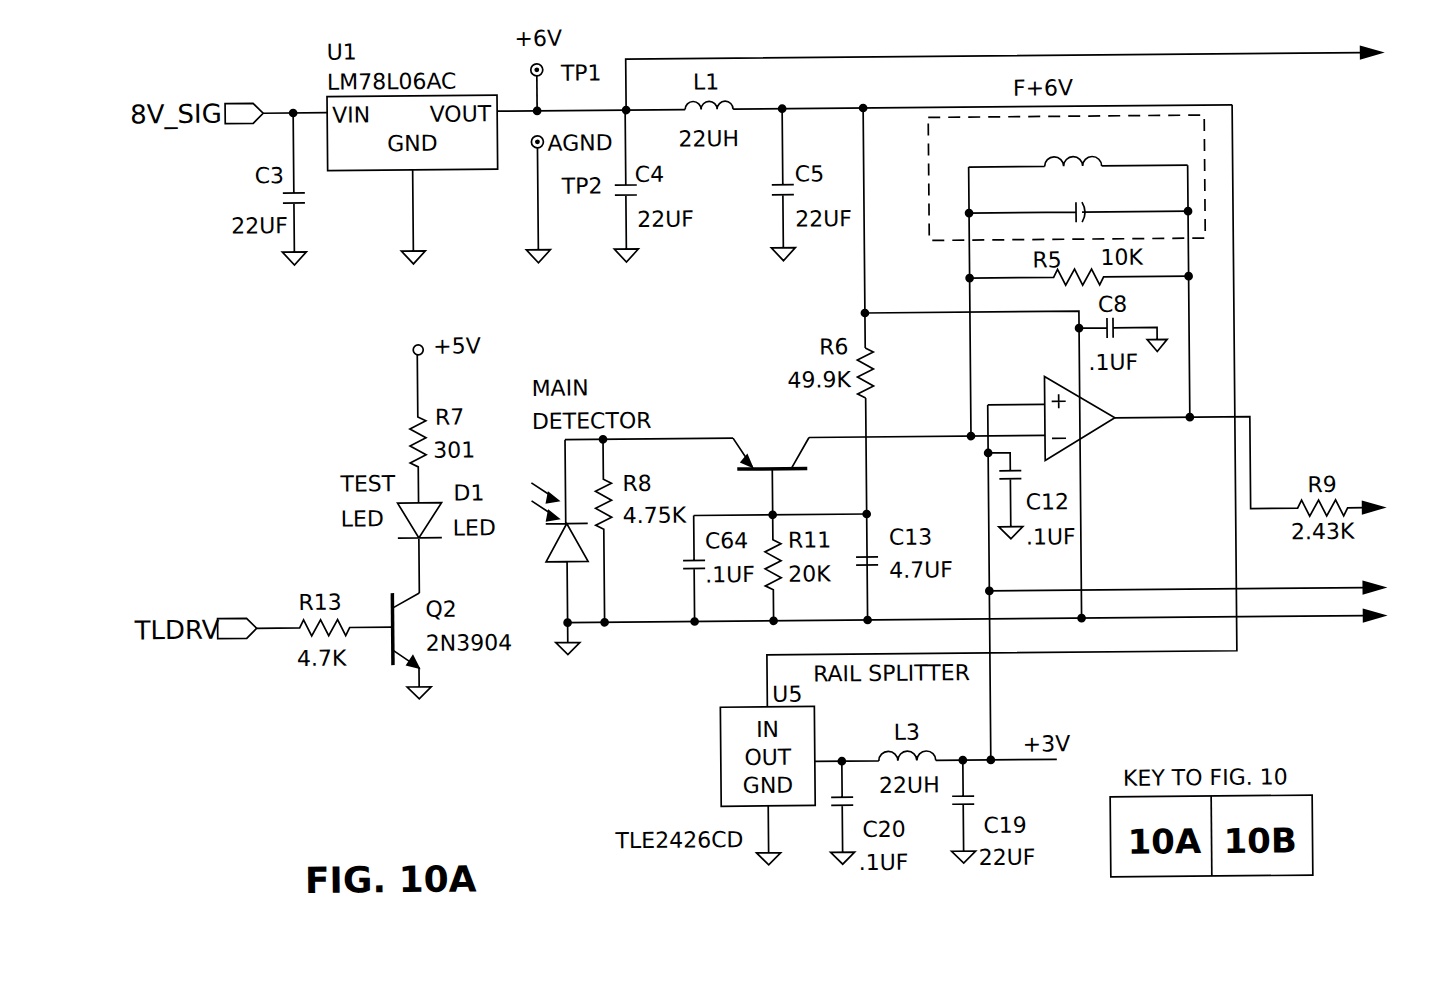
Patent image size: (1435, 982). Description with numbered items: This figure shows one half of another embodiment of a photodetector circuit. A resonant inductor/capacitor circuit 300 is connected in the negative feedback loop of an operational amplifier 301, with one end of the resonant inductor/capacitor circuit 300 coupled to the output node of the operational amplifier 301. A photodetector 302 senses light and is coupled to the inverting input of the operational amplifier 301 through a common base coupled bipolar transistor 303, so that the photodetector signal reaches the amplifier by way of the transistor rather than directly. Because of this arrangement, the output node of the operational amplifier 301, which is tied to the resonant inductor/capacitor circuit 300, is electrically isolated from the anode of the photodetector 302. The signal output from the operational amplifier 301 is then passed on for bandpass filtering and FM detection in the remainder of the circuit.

The resonant inductor/capacitor circuit 300 is at (1207, 155).
The operational amplifier 301 is at (1045, 391).
The photodetector 302 is at (545, 557).
The common base coupled bipolar transistor 303 is at (751, 461).